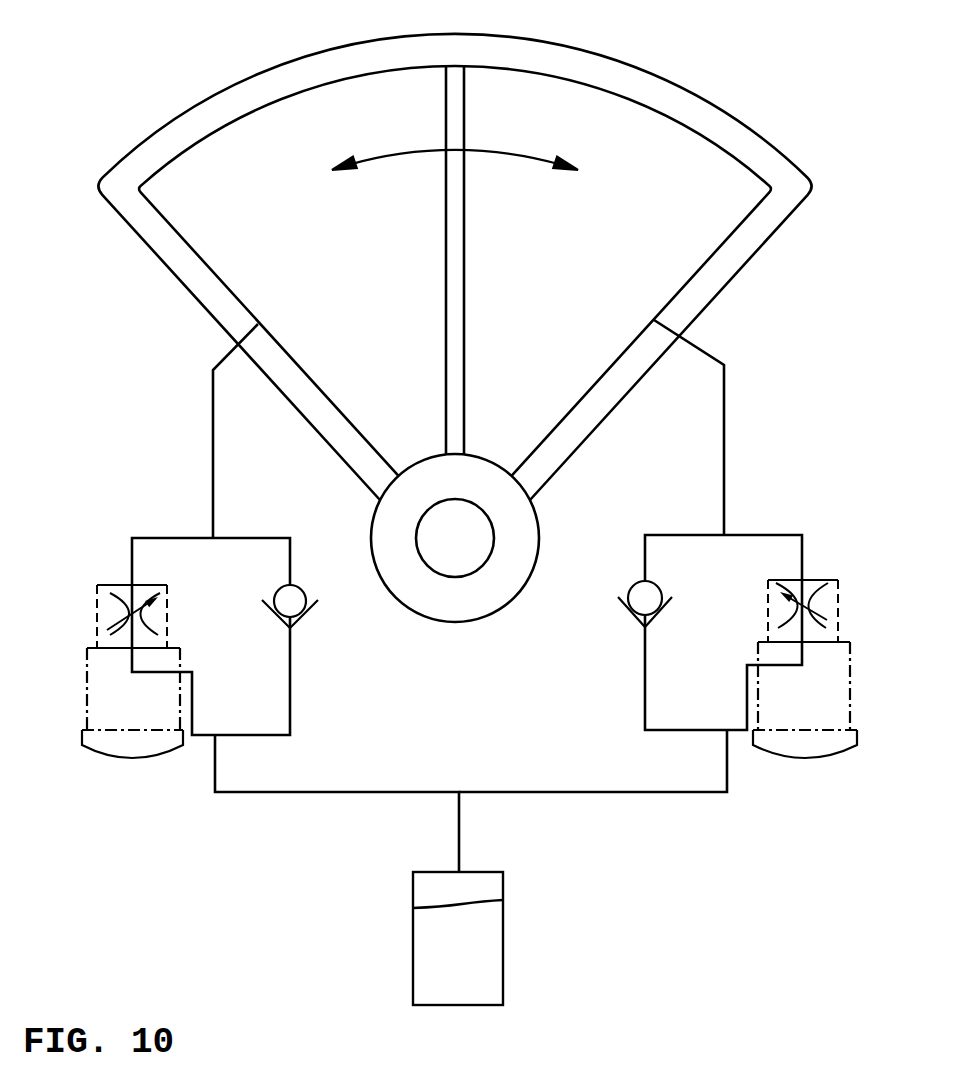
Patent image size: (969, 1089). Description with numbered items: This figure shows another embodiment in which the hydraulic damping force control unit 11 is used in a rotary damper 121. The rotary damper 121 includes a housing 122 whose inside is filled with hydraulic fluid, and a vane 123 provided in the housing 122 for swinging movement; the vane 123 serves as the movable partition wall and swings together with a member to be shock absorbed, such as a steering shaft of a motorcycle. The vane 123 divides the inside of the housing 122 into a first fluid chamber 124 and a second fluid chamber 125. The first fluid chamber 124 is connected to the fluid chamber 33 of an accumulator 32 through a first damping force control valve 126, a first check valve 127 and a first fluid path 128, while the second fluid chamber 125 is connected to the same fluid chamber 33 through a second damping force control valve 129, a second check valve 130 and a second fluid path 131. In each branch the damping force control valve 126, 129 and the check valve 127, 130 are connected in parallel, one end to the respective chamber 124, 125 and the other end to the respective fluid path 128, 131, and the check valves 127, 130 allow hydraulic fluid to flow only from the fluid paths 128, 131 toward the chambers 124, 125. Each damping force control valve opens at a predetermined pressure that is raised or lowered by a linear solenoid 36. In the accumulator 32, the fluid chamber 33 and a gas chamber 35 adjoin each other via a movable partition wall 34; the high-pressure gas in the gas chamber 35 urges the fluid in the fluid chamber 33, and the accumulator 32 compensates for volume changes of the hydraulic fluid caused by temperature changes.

The rotary damper 121 is at (454, 317).
The housing 122 is at (202, 103).
The vane 123 is at (465, 391).
The first fluid chamber 124 is at (327, 291).
The second fluid chamber 125 is at (540, 291).
The first damping force control valve 126 is at (104, 599).
The first check valve 127 is at (296, 630).
The first fluid path 128 is at (293, 793).
The second damping force control valve 129 is at (824, 597).
The second check valve 130 is at (640, 630).
The second fluid path 131 is at (600, 793).
The hydraulic damping force control unit 11 is at (132, 826).
The linear solenoid 36 is at (86, 765).
The accumulator 32 is at (451, 938).
The fluid chamber 33 is at (451, 902).
The movable partition wall 34 is at (472, 905).
The gas chamber 35 is at (446, 978).